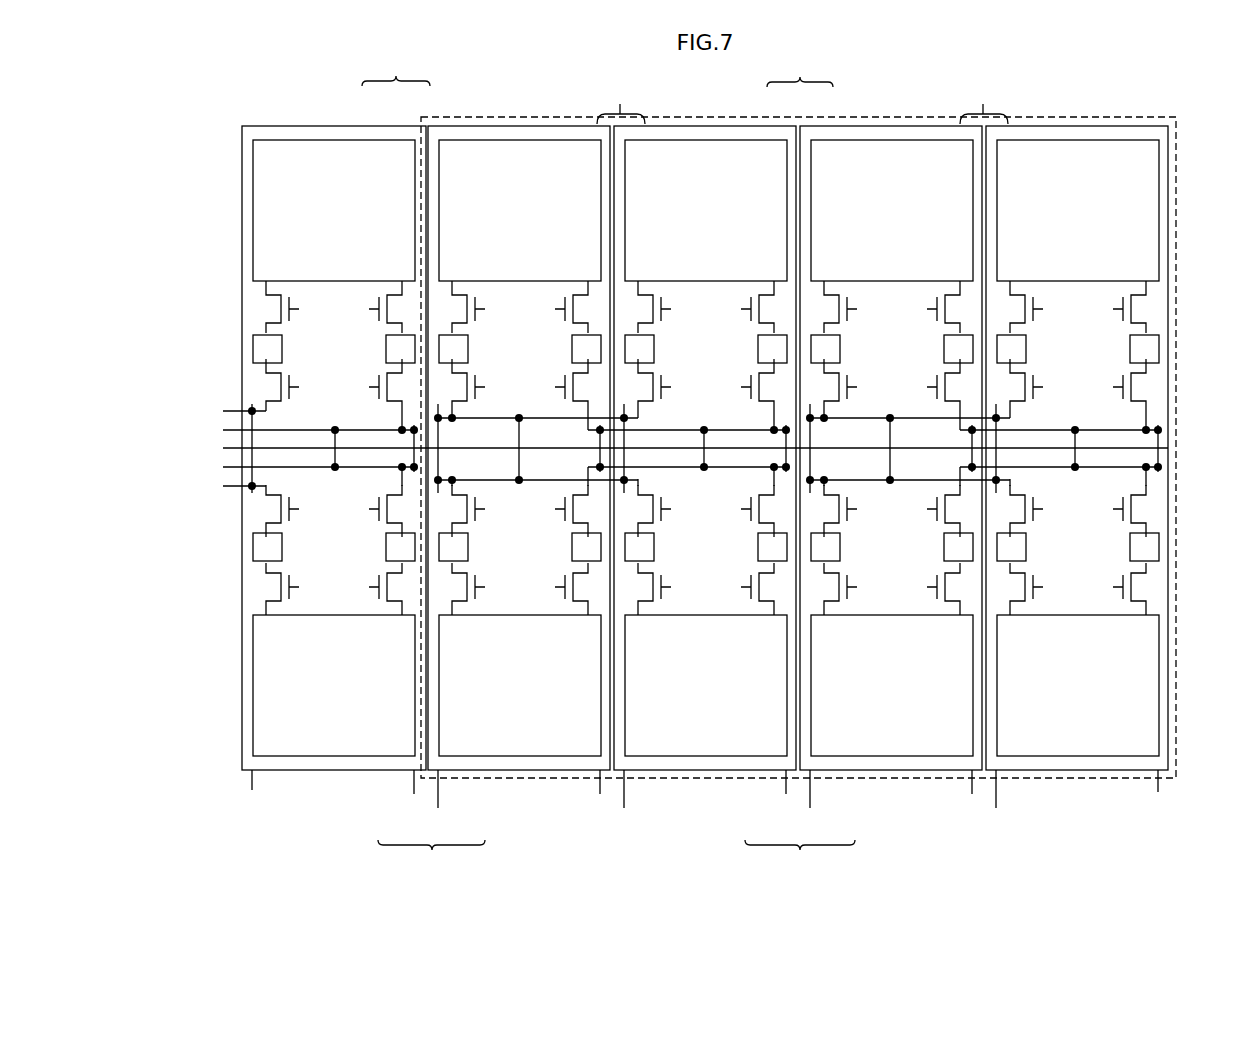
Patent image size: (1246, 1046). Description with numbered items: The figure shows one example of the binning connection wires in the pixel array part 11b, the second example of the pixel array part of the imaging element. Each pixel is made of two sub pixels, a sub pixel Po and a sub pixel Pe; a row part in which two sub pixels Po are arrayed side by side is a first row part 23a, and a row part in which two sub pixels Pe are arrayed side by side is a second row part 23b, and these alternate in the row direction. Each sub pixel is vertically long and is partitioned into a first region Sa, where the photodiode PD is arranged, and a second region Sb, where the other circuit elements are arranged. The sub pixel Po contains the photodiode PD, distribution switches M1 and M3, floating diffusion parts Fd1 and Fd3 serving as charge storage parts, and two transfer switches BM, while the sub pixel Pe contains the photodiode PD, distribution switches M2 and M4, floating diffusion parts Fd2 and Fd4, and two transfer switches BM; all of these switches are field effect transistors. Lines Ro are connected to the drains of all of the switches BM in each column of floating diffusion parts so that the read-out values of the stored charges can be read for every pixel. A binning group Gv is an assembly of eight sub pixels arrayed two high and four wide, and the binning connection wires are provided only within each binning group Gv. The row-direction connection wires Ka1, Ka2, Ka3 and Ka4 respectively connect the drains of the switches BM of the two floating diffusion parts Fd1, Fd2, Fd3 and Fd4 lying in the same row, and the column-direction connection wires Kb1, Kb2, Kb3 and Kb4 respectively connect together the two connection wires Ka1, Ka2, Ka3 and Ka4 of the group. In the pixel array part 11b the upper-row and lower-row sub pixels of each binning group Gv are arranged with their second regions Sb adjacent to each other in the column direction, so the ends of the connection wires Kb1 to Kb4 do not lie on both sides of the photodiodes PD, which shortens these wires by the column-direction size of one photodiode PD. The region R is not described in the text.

The pixel array part 11b is at (230, 162).
The binning group Gv is at (913, 117).
The photodiode PD is at (706, 448).
The distribution switch M1 is at (664, 448).
The distribution switch M2 is at (571, 448).
The distribution switch M3 is at (747, 448).
The distribution switch M4 is at (654, 448).
The floating diffusion part Fd1 is at (656, 448).
The floating diffusion part Fd2 is at (563, 448).
The floating diffusion part Fd3 is at (753, 448).
The floating diffusion part Fd4 is at (660, 448).
The transfer switch BM is at (706, 448).
The line Ro is at (705, 617).
The connection wire Ka1 is at (563, 444).
The connection wire Ka2 is at (505, 477).
The connection wire Ka3 is at (633, 429).
The connection wire Ka4 is at (677, 466).
The connection wire Kb1 is at (893, 466).
The connection wire Kb2 is at (523, 467).
The connection wire Kb3 is at (777, 445).
The connection wire Kb4 is at (700, 458).
The first region Sa is at (704, 452).
The second region Sb is at (702, 439).
The column gap region R is at (442, 240).
The first row part 23a is at (984, 104).
The second row part 23b is at (621, 104).
The sub pixel Po is at (719, 464).
The sub pixel Pe is at (598, 463).